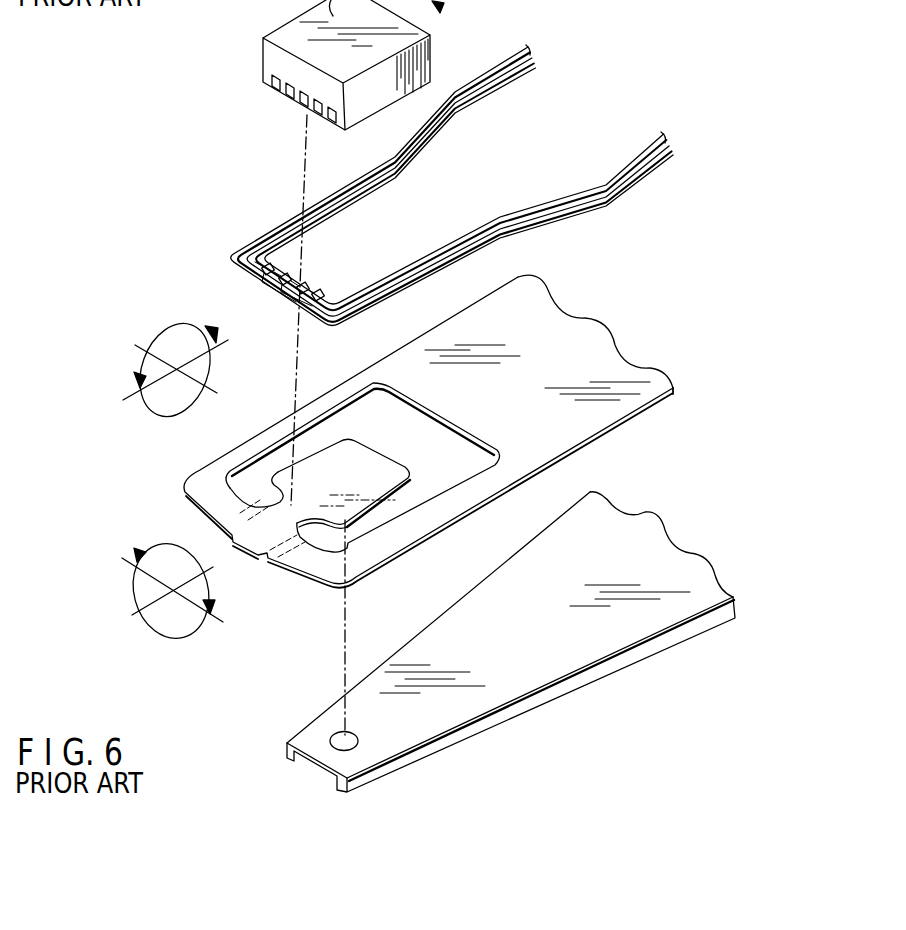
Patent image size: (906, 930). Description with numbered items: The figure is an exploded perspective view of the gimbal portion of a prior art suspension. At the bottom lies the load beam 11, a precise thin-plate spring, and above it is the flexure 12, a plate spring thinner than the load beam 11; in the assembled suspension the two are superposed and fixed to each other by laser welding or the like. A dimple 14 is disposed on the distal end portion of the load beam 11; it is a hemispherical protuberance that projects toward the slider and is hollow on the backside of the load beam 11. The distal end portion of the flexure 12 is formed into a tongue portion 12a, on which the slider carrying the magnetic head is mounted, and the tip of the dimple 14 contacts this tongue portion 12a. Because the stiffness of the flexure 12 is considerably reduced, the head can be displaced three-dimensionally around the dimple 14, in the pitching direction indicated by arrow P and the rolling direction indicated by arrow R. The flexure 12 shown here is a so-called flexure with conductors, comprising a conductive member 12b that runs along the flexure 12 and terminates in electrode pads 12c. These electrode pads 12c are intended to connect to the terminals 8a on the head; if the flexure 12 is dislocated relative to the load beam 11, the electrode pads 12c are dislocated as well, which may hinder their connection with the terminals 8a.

The terminals 8a is at (283, 88).
The load beam 11 is at (533, 673).
The flexure 12 is at (595, 420).
The tongue portion 12a is at (360, 458).
The conductive member 12b is at (550, 212).
The electrode pads 12c is at (318, 293).
The dimple 14 is at (337, 734).
The pitching direction P is at (178, 325).
The rolling direction R is at (212, 583).